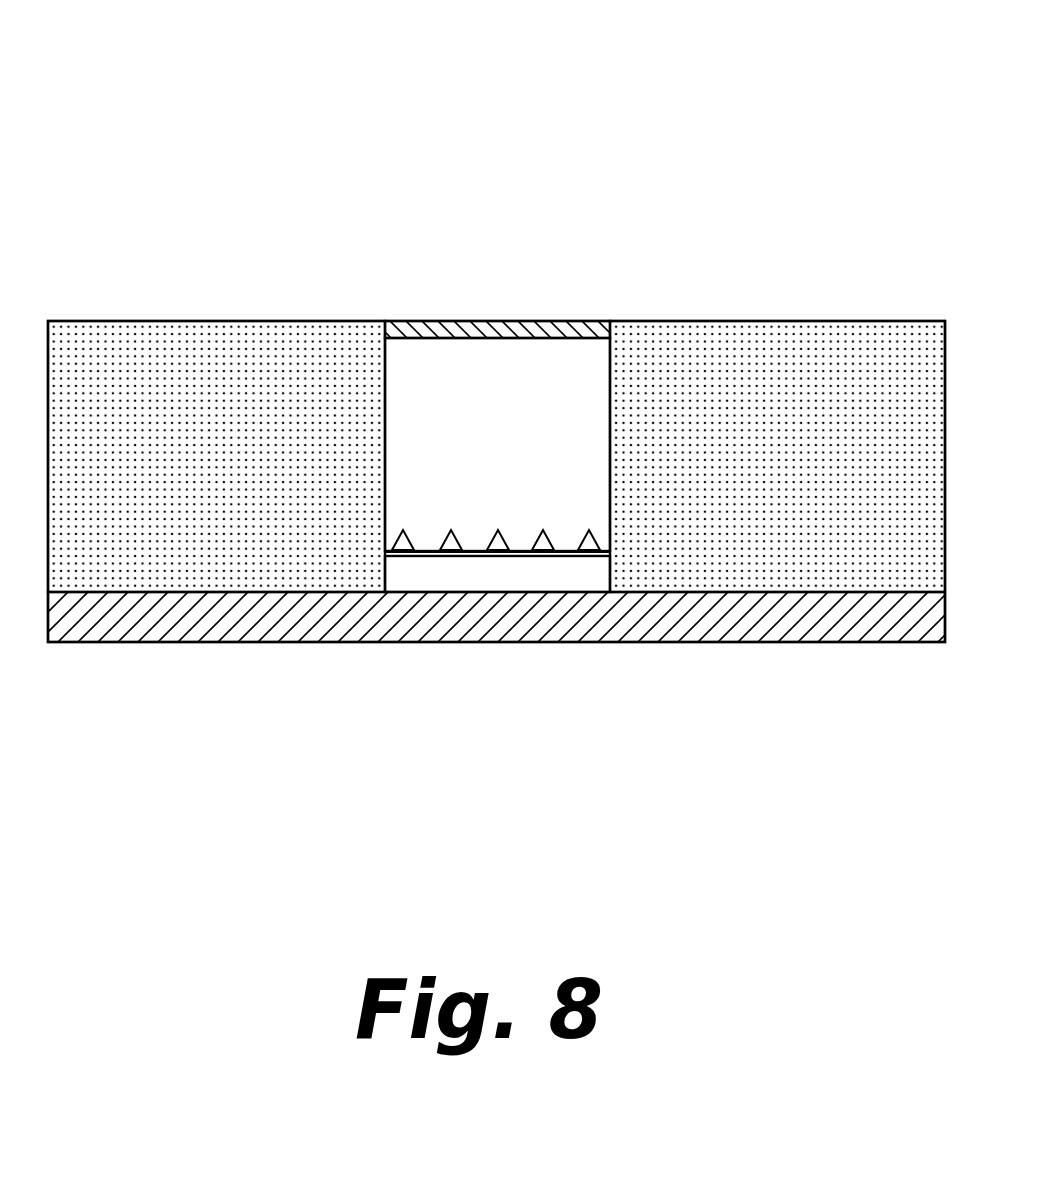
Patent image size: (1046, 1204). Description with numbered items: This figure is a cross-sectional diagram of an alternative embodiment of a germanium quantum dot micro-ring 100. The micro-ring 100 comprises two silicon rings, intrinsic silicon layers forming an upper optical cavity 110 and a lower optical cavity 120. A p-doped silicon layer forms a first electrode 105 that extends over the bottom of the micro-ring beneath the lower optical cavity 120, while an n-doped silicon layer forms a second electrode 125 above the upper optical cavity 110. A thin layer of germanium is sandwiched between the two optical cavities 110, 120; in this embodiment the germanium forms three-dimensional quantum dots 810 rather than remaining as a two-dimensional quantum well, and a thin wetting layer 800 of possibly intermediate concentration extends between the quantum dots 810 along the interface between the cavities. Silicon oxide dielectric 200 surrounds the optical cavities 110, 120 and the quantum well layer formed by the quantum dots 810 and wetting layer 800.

The micro-ring 100 is at (352, 88).
The silicon oxide dielectric 200 is at (170, 365).
The first electrode 105 is at (218, 643).
The upper optical cavity 110 is at (420, 395).
The second electrode 125 is at (542, 318).
The quantum dots 810 is at (457, 538).
The thin germanium quantum structure 800 is at (515, 558).
The lower optical cavity 120 is at (575, 582).